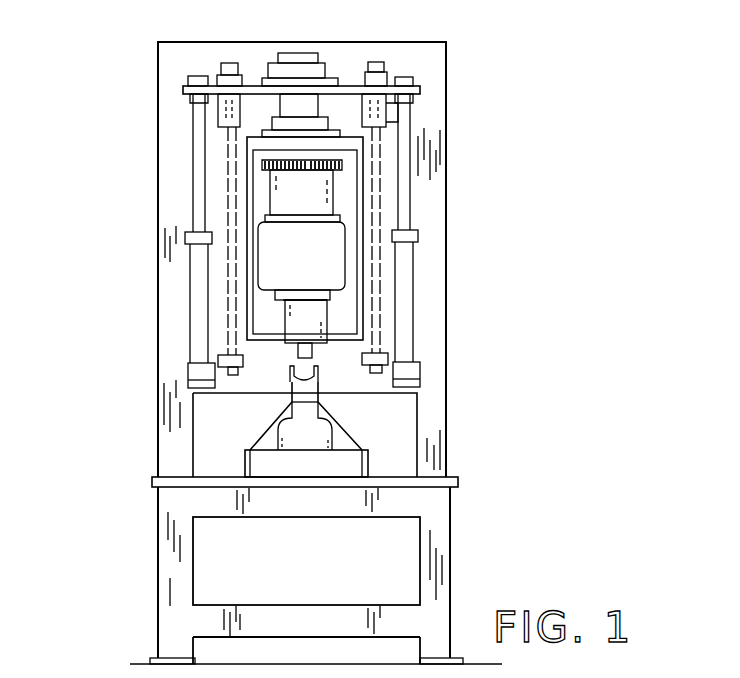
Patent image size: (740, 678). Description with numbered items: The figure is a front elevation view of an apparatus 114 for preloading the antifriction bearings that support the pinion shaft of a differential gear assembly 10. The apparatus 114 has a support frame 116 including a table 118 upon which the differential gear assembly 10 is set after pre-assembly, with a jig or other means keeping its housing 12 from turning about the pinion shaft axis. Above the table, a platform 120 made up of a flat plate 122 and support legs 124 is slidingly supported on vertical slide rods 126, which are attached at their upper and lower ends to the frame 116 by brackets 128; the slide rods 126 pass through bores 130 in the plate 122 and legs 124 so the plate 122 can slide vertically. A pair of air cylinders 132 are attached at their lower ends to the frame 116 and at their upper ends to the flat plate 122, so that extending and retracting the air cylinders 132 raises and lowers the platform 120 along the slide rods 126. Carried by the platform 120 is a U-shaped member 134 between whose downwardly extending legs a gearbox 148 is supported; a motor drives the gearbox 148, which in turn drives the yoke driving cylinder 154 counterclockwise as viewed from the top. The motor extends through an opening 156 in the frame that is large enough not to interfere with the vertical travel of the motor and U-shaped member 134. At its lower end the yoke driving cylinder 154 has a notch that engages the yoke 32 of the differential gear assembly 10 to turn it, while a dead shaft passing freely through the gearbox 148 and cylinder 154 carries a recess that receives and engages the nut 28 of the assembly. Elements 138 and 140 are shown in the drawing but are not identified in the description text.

The differential gear assembly 10 is at (337, 427).
The housing 12 is at (377, 452).
The nut 28 is at (322, 384).
The yoke 32 is at (318, 372).
The apparatus 114 is at (470, 163).
The support frame 116 is at (433, 295).
The table 118 is at (222, 480).
The platform 120 is at (196, 78).
The flat plate 122 is at (412, 88).
The support legs 124 is at (386, 113).
The slide rods 126 is at (228, 203).
The brackets 128 is at (212, 77).
The bores 130 is at (215, 108).
The air cylinders 132 is at (198, 280).
The U-shaped member 134 is at (255, 188).
The coupling 138 is at (297, 54).
The cap 140 is at (323, 70).
The gearbox 148 is at (328, 263).
The yoke driving cylinder 154 is at (313, 317).
The opening 156 is at (270, 298).